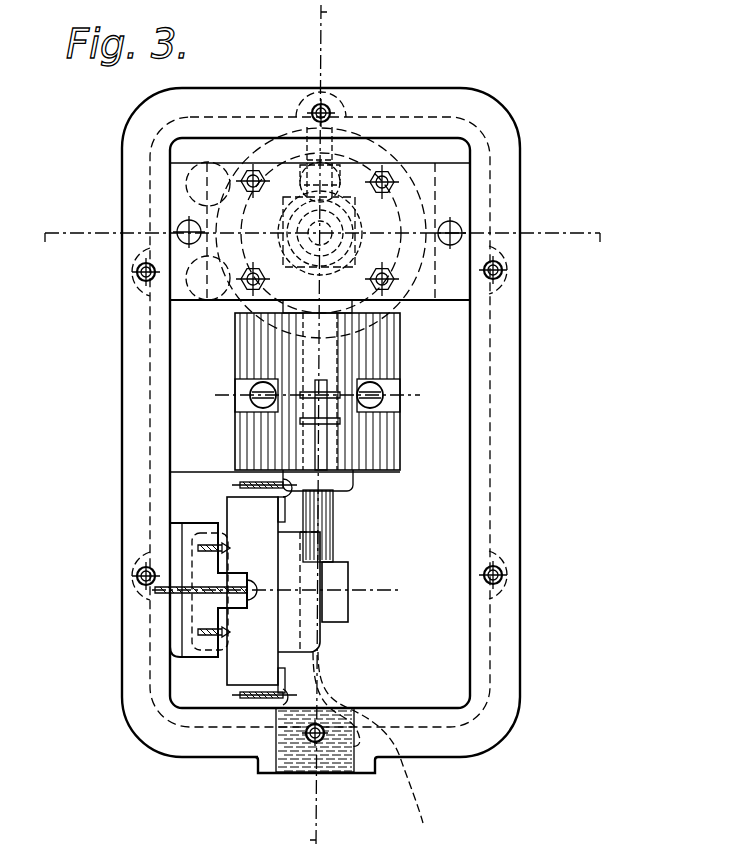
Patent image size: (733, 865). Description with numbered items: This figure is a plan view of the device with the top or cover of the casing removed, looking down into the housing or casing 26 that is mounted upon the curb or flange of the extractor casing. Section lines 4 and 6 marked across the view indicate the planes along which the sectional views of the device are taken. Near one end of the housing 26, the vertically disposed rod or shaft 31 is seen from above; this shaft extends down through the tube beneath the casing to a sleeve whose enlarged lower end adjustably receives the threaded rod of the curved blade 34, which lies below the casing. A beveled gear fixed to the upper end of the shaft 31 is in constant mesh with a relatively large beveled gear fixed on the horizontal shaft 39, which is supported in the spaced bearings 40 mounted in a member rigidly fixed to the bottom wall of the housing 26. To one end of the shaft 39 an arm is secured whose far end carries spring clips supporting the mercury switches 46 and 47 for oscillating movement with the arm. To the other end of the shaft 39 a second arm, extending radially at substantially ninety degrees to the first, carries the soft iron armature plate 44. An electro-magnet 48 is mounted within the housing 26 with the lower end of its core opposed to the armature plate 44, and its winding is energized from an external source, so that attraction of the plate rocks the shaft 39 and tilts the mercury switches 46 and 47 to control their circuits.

The section line 4- 4 is at (327, 427).
The section line 6- 6 is at (319, 228).
The housing or casing 26 is at (137, 462).
The rod or shaft 31 is at (345, 231).
The curved blade 34 is at (366, 748).
The horizontal shaft 39 is at (338, 523).
The bearings 40 is at (285, 433).
The soft iron armature plate 44 is at (350, 615).
The mercury switch 46 is at (190, 182).
The mercury switch 47 is at (190, 290).
The electro-magnet 48 is at (300, 637).